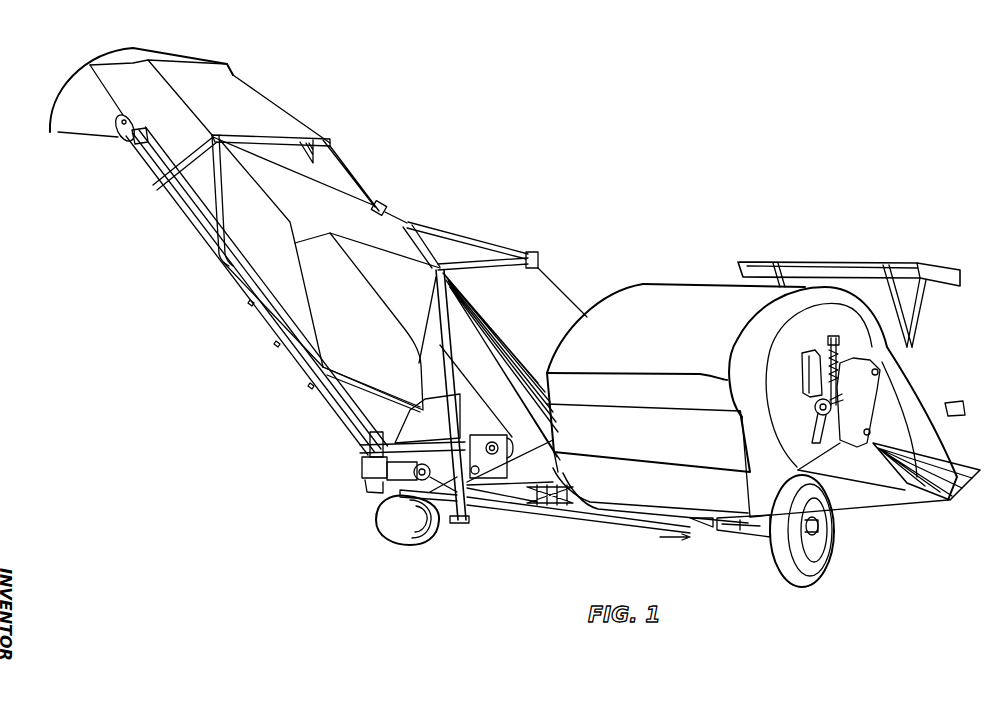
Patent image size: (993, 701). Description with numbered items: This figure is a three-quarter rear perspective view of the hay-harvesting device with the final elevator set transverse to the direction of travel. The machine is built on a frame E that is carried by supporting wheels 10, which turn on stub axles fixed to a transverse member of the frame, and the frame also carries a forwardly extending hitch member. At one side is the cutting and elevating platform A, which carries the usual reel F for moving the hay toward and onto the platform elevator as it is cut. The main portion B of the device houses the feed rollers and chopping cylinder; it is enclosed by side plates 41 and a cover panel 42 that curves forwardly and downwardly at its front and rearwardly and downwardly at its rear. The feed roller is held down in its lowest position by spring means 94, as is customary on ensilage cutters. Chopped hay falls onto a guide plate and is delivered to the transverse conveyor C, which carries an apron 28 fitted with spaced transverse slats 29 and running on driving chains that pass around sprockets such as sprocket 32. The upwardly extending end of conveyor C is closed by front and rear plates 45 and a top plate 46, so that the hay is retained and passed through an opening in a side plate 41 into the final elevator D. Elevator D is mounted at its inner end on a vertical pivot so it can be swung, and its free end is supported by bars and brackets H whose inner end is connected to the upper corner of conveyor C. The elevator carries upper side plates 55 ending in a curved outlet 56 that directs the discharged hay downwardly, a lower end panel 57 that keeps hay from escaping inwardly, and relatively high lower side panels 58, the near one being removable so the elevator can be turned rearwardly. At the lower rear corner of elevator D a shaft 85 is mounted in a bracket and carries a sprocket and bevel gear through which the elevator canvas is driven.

The supporting wheels 10 is at (388, 503).
The apron 28 is at (584, 512).
The transverse slats 29 is at (612, 519).
The sprocket 32 is at (248, 306).
The side plates 41 is at (820, 402).
The cover panel 42 is at (752, 400).
The front and rear plates 45 is at (498, 396).
The top plate 46 is at (515, 350).
The upper side plates 55 is at (210, 101).
The curved outlet 56 is at (52, 105).
The lower end panel 57 is at (427, 418).
The lower side panels 58 is at (367, 321).
The shaft 85 is at (364, 458).
The spring holding means 94 is at (818, 338).
The cutting and elevating platform A is at (905, 497).
The main portion of the device B is at (761, 423).
The transverse conveyor C is at (529, 311).
The final elevator D is at (140, 186).
The frame E is at (549, 513).
The reel F is at (912, 330).
The bars and brackets H is at (470, 232).